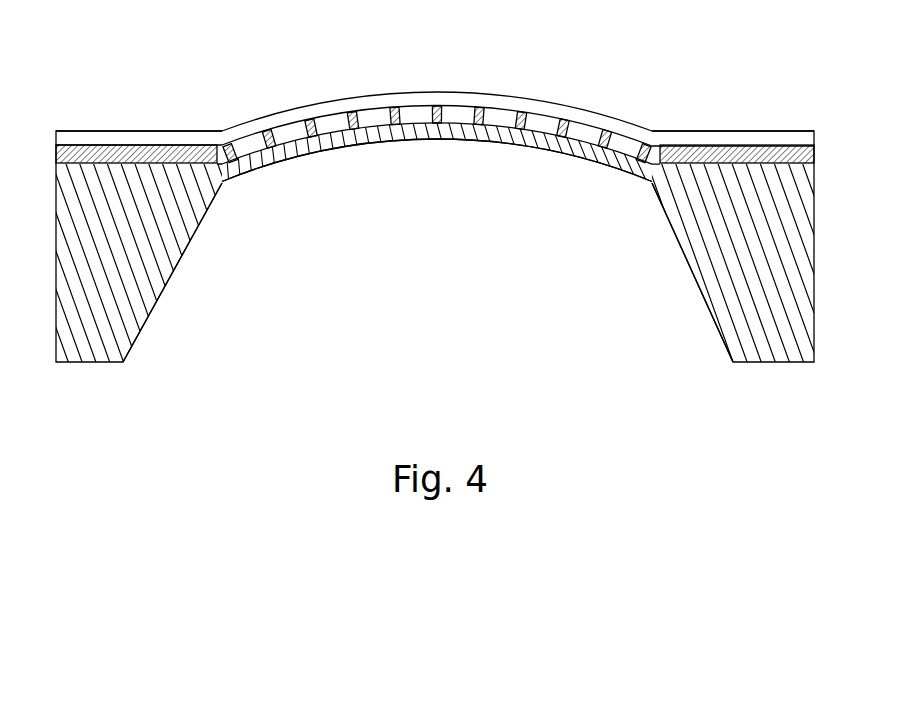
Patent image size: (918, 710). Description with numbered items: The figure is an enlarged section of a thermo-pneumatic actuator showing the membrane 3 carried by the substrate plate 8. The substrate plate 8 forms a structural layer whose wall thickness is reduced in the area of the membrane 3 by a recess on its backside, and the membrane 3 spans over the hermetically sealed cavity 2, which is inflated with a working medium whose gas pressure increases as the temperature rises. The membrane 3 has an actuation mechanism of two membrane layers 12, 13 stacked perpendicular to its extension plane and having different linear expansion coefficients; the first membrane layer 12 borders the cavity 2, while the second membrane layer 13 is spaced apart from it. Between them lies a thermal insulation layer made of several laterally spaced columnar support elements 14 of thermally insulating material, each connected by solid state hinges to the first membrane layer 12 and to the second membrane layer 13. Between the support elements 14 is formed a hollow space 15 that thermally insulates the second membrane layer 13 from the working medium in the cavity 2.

The cavity 2 is at (455, 291).
The membrane 3 is at (359, 201).
The substrate plate 8 is at (103, 345).
The first membrane layer 12 is at (507, 137).
The second membrane layer 13 is at (505, 103).
The support elements 14 is at (437, 118).
The hollow space 15 is at (378, 118).